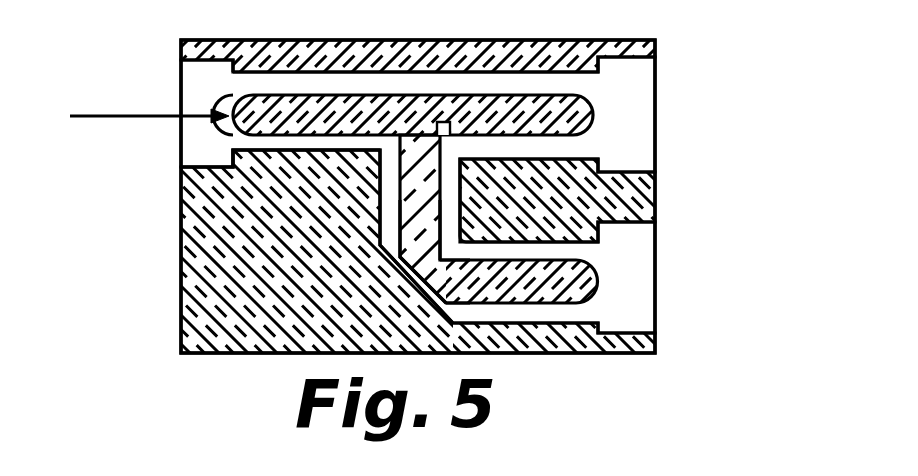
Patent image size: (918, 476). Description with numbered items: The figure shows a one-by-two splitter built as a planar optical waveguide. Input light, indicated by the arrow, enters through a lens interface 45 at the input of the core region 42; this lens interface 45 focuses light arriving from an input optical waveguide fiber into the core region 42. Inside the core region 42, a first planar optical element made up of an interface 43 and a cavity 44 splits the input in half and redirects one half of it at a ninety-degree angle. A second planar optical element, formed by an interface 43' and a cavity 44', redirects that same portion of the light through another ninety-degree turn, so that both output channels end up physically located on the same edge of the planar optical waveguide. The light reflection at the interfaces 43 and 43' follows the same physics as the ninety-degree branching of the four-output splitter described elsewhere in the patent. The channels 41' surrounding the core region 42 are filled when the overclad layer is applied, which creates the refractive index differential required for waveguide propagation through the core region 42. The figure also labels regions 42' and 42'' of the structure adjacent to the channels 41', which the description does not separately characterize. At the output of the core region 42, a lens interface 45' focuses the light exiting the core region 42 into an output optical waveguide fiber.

The channels 41' is at (421, 169).
The core region 42 is at (421, 176).
The insulating layer 42' is at (247, 151).
The insulating block 42'' is at (379, 251).
The interface 43 is at (433, 152).
The interface 43' is at (386, 255).
The cavity 44 is at (449, 68).
The cavity 44' is at (413, 301).
The lens interface 45 is at (151, 103).
The lens interface 45' is at (452, 108).